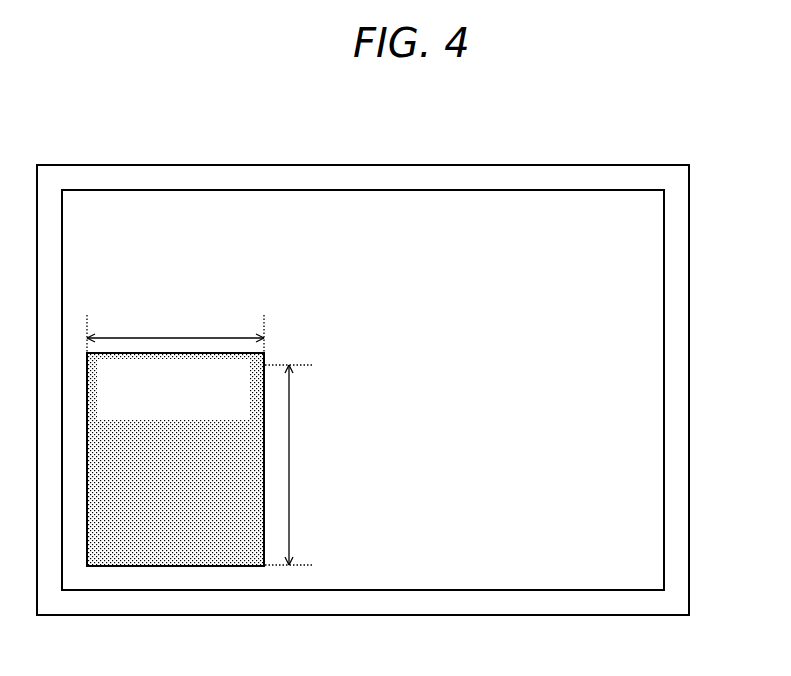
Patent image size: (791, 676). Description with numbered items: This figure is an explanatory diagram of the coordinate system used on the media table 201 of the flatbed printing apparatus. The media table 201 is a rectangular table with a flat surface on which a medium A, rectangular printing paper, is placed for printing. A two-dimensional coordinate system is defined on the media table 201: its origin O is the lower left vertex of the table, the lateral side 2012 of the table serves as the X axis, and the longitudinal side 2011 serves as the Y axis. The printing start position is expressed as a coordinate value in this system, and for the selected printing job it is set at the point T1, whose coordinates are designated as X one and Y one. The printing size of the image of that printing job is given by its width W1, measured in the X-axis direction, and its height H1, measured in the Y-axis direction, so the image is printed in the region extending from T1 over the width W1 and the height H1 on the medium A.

The media table 201 is at (648, 140).
The medium A is at (664, 264).
The longitudinal side 2011 is at (689, 400).
The lateral side 2012 is at (562, 615).
The origin O is at (38, 615).
The printing start position T1 is at (88, 565).
The width of the image of printing job 1 W1 is at (150, 338).
The height of the image of printing job 1 H1 is at (289, 427).